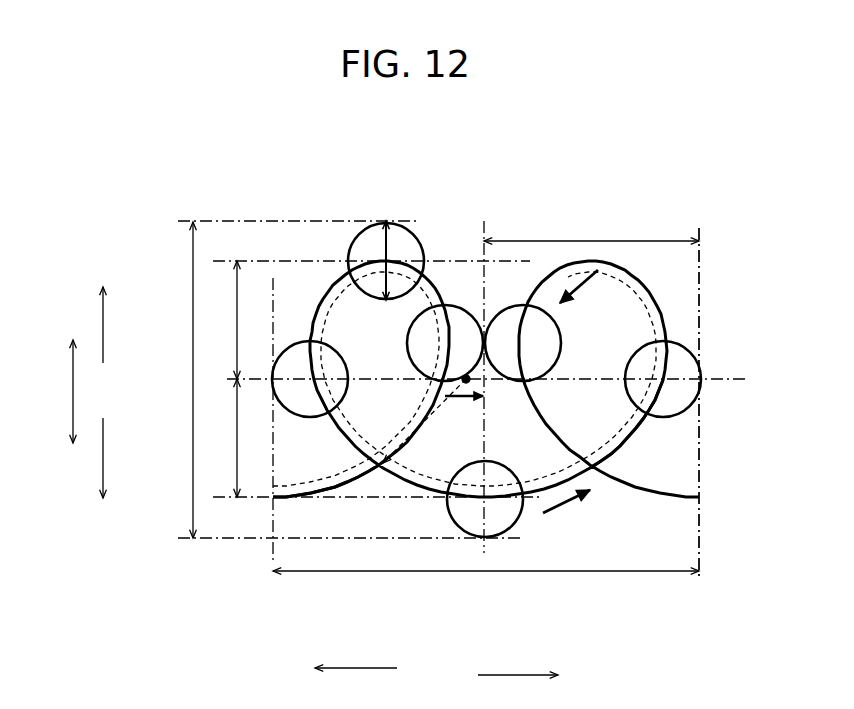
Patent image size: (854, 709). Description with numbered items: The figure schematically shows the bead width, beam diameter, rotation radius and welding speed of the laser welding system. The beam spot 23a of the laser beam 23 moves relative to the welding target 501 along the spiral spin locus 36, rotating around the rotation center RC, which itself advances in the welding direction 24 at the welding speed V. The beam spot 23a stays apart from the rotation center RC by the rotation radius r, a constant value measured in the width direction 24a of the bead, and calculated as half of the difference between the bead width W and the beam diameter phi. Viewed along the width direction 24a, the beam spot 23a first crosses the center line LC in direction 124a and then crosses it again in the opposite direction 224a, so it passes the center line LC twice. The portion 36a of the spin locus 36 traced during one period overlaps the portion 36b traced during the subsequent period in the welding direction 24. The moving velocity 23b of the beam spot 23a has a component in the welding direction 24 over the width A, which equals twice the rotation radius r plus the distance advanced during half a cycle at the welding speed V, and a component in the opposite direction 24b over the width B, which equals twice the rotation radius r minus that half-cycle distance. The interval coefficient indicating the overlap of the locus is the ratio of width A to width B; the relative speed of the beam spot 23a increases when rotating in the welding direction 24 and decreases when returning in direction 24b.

The laser beam 23 is at (477, 345).
The beam spot 23a is at (355, 240).
The moving velocity 23b is at (582, 284).
The welding direction 24 is at (505, 675).
The width direction 24a is at (73, 385).
The direction opposite to welding direction 24b is at (340, 668).
The direction along width direction 124a is at (102, 322).
The direction opposite to direction 124a 224a is at (102, 470).
The spin locus 36 is at (643, 292).
The portion of spin locus 36a is at (340, 473).
The portion of spin locus 36b is at (612, 432).
The welding target 501 is at (677, 222).
The rotation center RC is at (466, 376).
The center line LC is at (720, 375).
The width of bead W is at (177, 380).
The width A is at (486, 585).
The width B is at (591, 226).
The rotation radius r is at (340, 379).
The welding speed V is at (464, 408).
The beam diameter phi is at (387, 235).